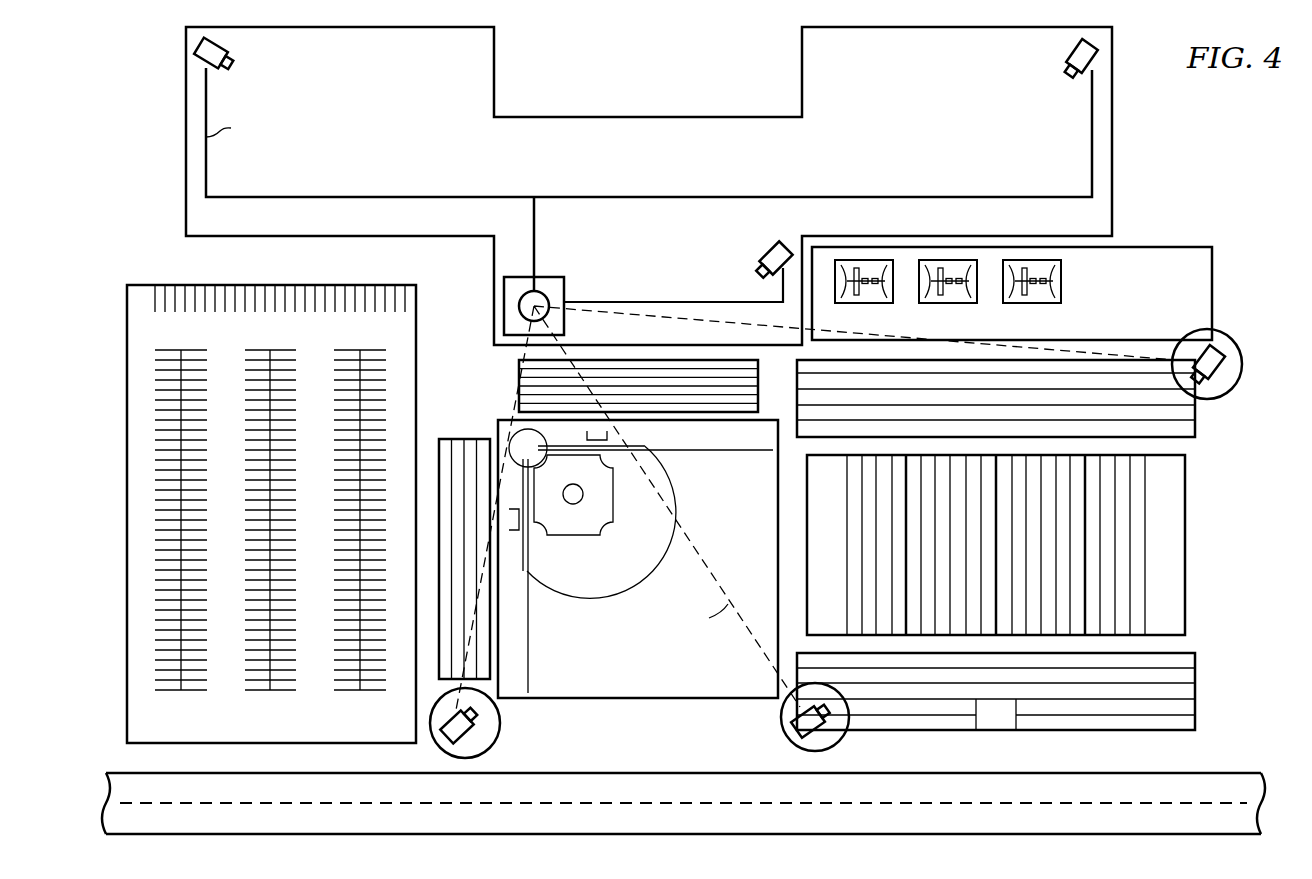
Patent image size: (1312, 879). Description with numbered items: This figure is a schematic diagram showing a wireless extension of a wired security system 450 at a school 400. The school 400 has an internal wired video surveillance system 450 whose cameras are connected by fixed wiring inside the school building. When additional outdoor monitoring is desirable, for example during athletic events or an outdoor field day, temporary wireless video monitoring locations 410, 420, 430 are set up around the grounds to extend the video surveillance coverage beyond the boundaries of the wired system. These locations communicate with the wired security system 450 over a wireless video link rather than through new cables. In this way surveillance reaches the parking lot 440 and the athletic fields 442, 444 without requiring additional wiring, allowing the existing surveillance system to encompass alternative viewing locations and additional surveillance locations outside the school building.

The school 400 is at (1218, 166).
The temporary wireless video monitoring location 410 is at (500, 724).
The temporary wireless video monitoring location 420 is at (781, 722).
The temporary wireless video monitoring location 430 is at (1242, 364).
The parking lot 440 is at (288, 728).
The athletic field 442 is at (638, 699).
The athletic field 444 is at (1187, 543).
The wired security system 450 is at (564, 290).